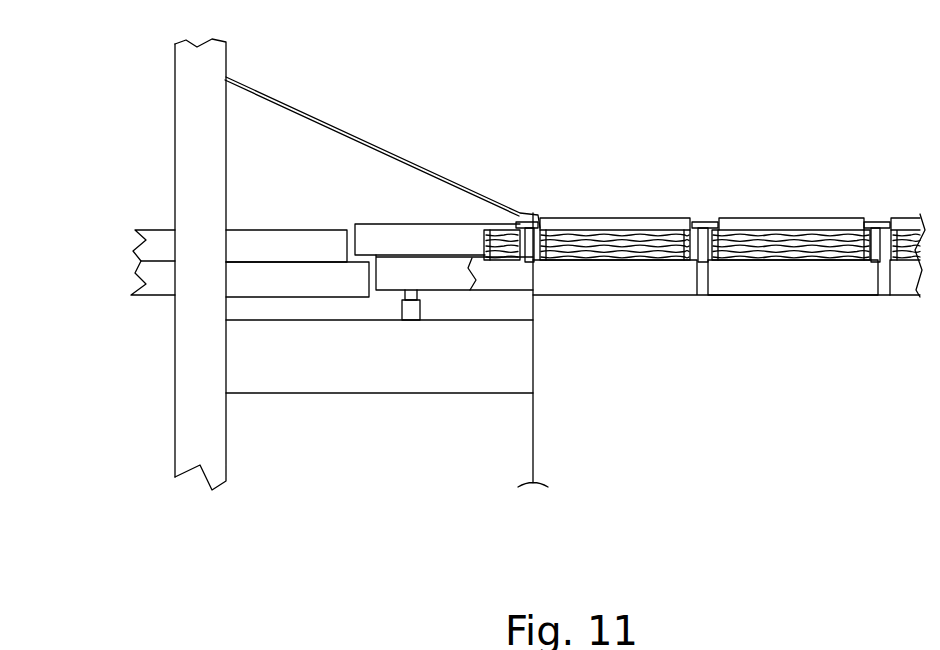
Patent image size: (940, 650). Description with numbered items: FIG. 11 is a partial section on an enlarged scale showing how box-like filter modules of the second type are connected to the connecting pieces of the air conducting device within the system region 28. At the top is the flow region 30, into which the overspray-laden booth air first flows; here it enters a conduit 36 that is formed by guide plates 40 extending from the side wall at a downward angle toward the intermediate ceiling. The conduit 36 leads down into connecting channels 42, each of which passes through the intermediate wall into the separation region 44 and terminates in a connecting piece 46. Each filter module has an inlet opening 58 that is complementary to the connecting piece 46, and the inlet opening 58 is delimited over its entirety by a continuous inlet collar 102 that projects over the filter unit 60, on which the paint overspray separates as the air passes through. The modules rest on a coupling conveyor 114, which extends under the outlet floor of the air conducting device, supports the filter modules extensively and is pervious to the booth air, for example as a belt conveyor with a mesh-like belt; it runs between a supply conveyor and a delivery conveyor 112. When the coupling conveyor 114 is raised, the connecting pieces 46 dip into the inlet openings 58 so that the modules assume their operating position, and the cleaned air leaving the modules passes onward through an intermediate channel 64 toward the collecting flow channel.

The system region 28 is at (160, 145).
The flow region 30 is at (160, 82).
The conduit 36 is at (662, 50).
The guide plate 40 is at (355, 135).
The connecting channel 42 is at (575, 222).
The separation region 44 is at (262, 458).
The connecting piece 46 is at (546, 224).
The inlet opening 58 is at (665, 236).
The filter unit 60 is at (622, 237).
The intermediate channel 64 is at (562, 460).
The inlet collar 102 is at (680, 233).
The delivery conveyor 112 is at (152, 289).
The coupling conveyor 114 is at (828, 296).